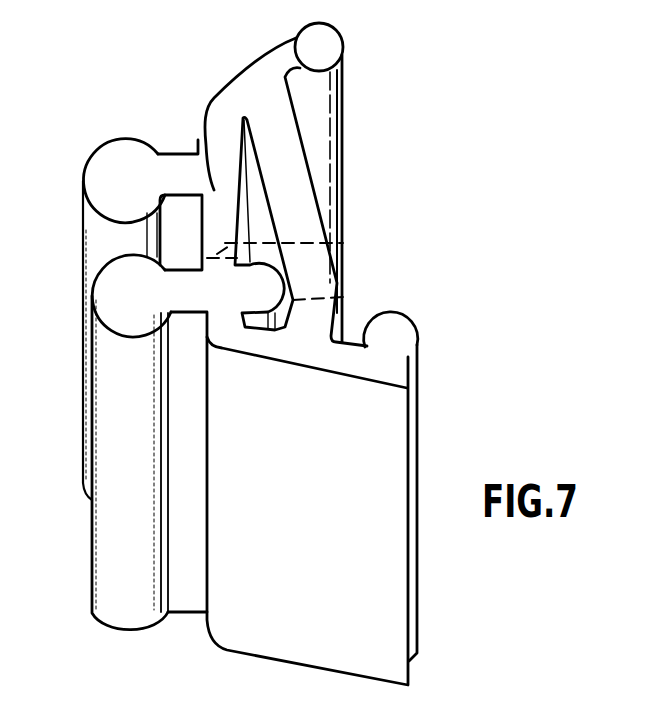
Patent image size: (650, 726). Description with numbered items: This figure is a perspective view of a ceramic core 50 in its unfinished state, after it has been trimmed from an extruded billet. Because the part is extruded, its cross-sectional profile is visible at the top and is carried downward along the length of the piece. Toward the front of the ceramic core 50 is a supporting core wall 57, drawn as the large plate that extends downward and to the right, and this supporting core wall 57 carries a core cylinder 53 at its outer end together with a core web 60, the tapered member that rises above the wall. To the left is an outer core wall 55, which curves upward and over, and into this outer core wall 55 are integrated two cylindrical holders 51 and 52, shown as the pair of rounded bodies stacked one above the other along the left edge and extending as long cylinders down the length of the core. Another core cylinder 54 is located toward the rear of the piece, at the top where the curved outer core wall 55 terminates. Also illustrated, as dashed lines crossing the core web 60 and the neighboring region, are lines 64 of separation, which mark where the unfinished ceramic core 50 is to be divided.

The ceramic core 50 is at (241, 672).
The cylindrical holder 51 is at (112, 288).
The cylindrical holder 52 is at (129, 162).
The core cylinder 53 is at (393, 322).
The core cylinder 54 is at (327, 45).
The outer core wall 55 is at (213, 110).
The supporting core wall 57 is at (347, 427).
The core web 60 is at (297, 175).
The lines of separation 64 is at (312, 295).